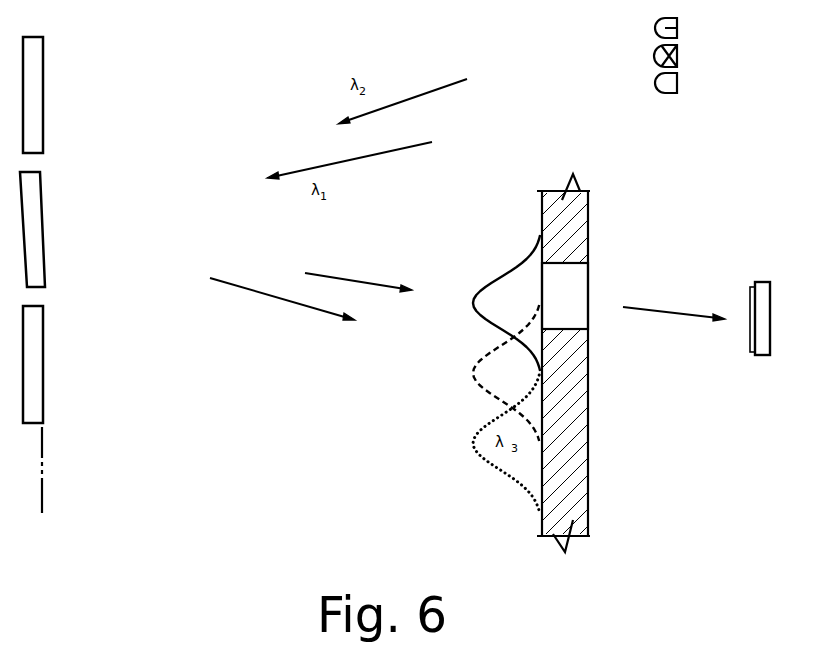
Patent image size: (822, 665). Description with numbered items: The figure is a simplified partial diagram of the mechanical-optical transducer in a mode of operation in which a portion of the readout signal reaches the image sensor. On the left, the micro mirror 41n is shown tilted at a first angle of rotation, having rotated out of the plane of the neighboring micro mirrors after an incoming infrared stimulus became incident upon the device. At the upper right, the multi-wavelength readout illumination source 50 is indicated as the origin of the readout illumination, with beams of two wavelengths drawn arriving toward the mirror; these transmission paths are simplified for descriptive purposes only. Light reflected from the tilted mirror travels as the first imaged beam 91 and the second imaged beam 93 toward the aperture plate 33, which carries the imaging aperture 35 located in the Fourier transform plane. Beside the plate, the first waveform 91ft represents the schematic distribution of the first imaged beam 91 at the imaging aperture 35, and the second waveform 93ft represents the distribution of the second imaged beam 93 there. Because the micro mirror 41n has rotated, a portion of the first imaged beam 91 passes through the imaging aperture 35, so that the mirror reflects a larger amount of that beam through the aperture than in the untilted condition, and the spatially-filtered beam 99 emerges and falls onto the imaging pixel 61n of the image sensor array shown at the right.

The micro mirror 41n is at (45, 250).
The readout illumination source 50 is at (620, 55).
The first imaged beam 91 is at (372, 282).
The second imaged beam 93 is at (297, 305).
The first waveform 91ft is at (512, 263).
The second waveform 93ft is at (480, 387).
The aperture plate 33 is at (587, 253).
The imaging aperture 35 is at (573, 305).
The spatially-filtered beam 99 is at (697, 320).
The imaging pixel 61n is at (772, 307).